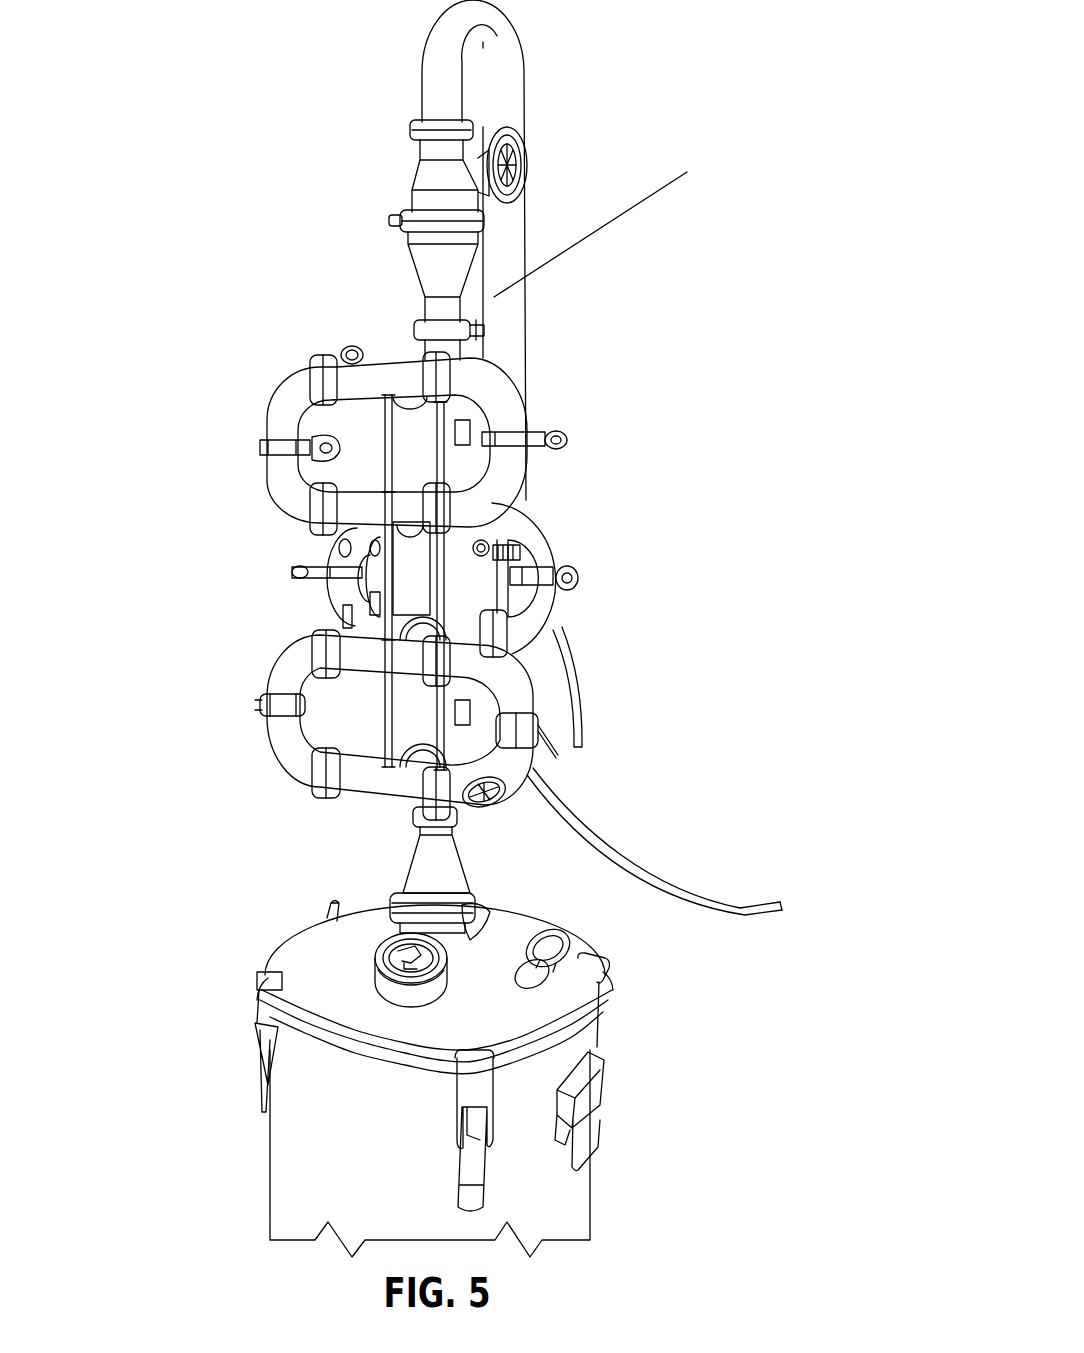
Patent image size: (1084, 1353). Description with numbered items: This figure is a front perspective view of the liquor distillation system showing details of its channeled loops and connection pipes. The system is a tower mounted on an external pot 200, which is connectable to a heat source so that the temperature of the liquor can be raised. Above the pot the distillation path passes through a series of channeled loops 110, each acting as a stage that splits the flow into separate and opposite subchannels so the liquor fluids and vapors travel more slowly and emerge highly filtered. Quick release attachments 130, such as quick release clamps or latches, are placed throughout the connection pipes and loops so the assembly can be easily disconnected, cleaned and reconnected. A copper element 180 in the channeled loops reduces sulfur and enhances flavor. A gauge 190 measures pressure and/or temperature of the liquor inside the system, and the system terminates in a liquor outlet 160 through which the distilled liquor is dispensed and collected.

The channeled loops 110 is at (276, 417).
The quick release attachments 130 is at (540, 572).
The liquor outlet 160 is at (779, 900).
The copper element 180 is at (527, 780).
The gauge 190 is at (522, 158).
The external pot 200 is at (357, 973).